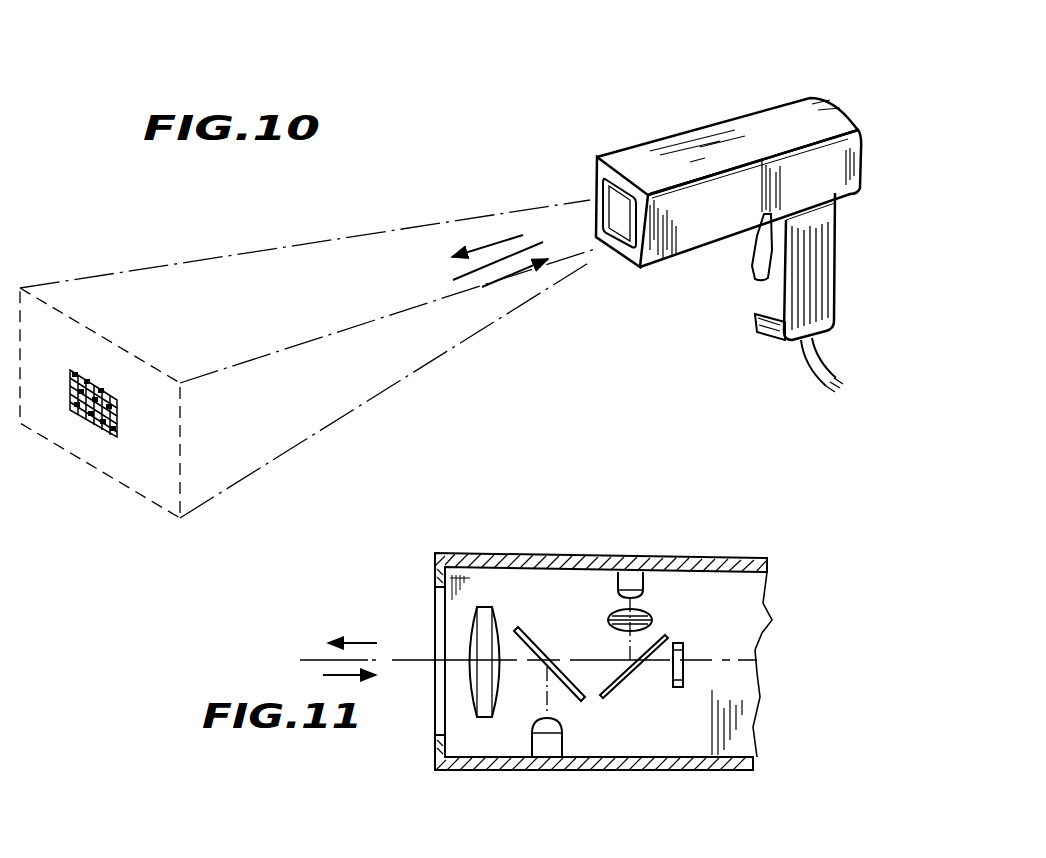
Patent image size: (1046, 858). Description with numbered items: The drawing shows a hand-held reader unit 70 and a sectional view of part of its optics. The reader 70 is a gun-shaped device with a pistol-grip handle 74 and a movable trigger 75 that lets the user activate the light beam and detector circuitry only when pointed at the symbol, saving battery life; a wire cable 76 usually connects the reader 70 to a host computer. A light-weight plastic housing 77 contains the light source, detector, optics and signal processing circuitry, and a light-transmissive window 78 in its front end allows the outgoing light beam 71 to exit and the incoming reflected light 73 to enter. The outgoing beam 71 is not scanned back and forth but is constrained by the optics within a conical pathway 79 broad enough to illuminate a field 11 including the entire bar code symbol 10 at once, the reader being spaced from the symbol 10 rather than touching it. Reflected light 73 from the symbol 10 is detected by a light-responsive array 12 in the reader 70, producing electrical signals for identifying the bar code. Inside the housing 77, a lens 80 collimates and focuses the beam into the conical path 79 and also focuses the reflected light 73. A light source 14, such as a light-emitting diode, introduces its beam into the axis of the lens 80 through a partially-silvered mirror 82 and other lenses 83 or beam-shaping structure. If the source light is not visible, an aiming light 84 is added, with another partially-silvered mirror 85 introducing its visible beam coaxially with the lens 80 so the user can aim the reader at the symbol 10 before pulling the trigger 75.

In FIG. 10, the bar code symbol 10 is at (90, 423).
In FIG. 10, the field 11 is at (113, 483).
In FIG. 11, the light-responsive array 12 is at (690, 655).
In FIG. 11, the light source 14 is at (627, 570).
In FIG. 10, the hand-held reader unit 70 is at (724, 199).
In FIG. 11, the hand-held reader unit 70 is at (577, 630).
In FIG. 10, the outgoing light beam 71 is at (474, 250).
In FIG. 11, the outgoing light beam 71 is at (352, 640).
In FIG. 10, the reflected light 73 is at (517, 272).
In FIG. 11, the reflected light 73 is at (358, 678).
In FIG. 10, the handle 74 is at (832, 262).
In FIG. 10, the trigger 75 is at (757, 278).
In FIG. 10, the wire cable 76 is at (820, 363).
In FIG. 10, the housing 77 is at (735, 125).
In FIG. 11, the housing 77 is at (500, 555).
In FIG. 10, the light-transmissive window 78 is at (598, 186).
In FIG. 11, the light-transmissive window 78 is at (427, 587).
In FIG. 10, the conical pathway 79 is at (378, 232).
In FIG. 11, the lens 80 is at (483, 717).
In FIG. 11, the partially-silvered mirror 82 is at (615, 682).
In FIG. 11, the lenses 83 is at (652, 620).
In FIG. 11, the aiming light 84 is at (538, 752).
In FIG. 11, the partially-silvered mirror 85 is at (577, 690).